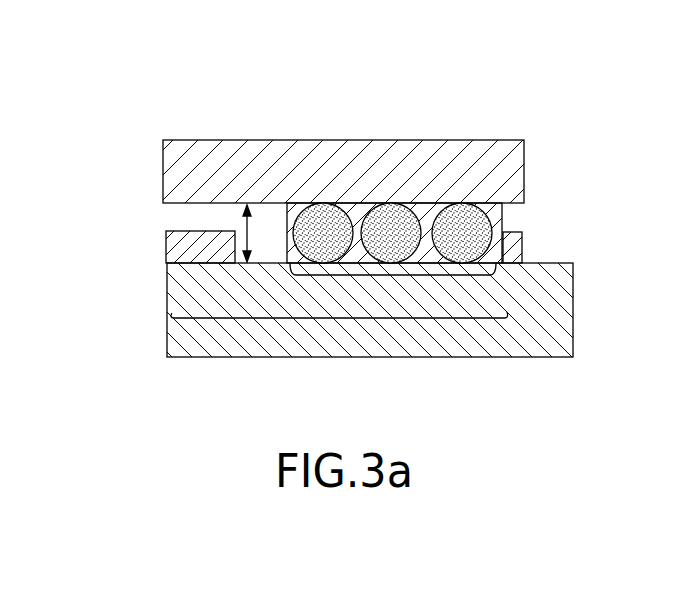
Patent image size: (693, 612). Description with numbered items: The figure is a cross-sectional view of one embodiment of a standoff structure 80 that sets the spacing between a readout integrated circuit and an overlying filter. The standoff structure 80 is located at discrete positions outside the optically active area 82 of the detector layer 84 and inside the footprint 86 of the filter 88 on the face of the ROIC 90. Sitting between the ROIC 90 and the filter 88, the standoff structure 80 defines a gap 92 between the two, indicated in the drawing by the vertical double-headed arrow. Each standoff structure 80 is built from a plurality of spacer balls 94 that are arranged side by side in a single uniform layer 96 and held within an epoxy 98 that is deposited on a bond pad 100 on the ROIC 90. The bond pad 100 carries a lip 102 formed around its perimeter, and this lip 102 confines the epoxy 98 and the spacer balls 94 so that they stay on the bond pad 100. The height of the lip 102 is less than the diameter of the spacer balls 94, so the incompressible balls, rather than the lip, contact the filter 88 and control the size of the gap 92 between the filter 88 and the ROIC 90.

The standoff structure 80 is at (528, 208).
The optically active area 82 is at (197, 231).
The detector layer 84 is at (166, 244).
The footprint 86 is at (333, 318).
The filter 88 is at (270, 140).
The ROIC 90 is at (529, 324).
The gap 92 is at (235, 236).
The spacer balls 94 is at (464, 240).
The single uniform layer 96 is at (502, 218).
The epoxy 98 is at (345, 254).
The bond pad 100 is at (389, 276).
The lip 102 is at (522, 243).